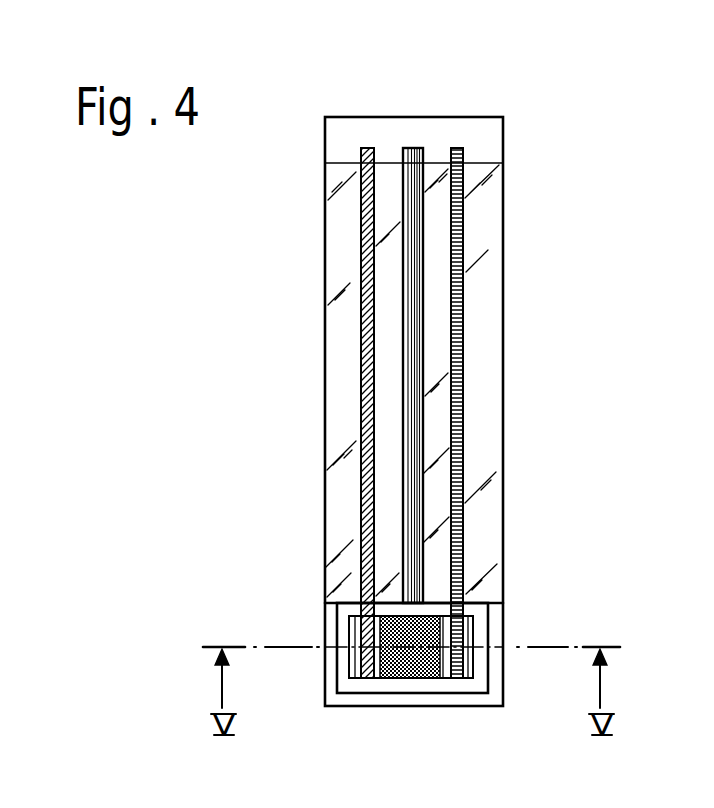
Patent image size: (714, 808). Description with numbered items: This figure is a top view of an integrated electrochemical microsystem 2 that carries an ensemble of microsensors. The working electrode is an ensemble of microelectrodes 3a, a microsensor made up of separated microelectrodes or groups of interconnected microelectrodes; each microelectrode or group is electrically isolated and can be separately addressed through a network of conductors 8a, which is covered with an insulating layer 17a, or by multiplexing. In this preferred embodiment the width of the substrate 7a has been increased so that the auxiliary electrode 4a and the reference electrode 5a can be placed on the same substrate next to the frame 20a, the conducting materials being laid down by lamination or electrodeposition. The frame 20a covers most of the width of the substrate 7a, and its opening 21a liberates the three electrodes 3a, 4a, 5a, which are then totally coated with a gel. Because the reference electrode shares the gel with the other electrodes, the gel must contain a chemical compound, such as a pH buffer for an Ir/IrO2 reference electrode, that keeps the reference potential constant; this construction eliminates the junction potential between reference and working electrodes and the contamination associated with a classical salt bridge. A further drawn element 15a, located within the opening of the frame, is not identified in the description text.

The integrated electrochemical microsystem 2 is at (452, 114).
The ensemble of microelectrodes 3a is at (427, 623).
The auxiliary electrode 4a is at (363, 212).
The reference electrode 5a is at (462, 182).
The substrate 7a is at (503, 418).
The network of conductors 8a is at (410, 303).
The sensing body 15a is at (416, 658).
The insulating layer 17a is at (480, 374).
The frame 20a is at (352, 684).
The opening 21a is at (356, 622).